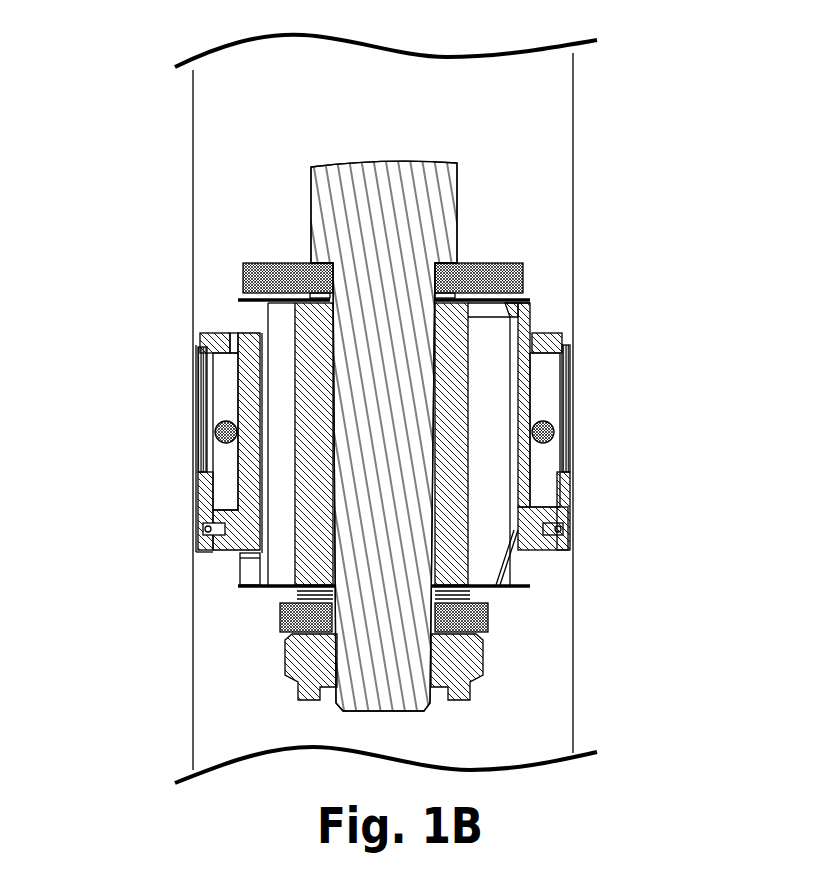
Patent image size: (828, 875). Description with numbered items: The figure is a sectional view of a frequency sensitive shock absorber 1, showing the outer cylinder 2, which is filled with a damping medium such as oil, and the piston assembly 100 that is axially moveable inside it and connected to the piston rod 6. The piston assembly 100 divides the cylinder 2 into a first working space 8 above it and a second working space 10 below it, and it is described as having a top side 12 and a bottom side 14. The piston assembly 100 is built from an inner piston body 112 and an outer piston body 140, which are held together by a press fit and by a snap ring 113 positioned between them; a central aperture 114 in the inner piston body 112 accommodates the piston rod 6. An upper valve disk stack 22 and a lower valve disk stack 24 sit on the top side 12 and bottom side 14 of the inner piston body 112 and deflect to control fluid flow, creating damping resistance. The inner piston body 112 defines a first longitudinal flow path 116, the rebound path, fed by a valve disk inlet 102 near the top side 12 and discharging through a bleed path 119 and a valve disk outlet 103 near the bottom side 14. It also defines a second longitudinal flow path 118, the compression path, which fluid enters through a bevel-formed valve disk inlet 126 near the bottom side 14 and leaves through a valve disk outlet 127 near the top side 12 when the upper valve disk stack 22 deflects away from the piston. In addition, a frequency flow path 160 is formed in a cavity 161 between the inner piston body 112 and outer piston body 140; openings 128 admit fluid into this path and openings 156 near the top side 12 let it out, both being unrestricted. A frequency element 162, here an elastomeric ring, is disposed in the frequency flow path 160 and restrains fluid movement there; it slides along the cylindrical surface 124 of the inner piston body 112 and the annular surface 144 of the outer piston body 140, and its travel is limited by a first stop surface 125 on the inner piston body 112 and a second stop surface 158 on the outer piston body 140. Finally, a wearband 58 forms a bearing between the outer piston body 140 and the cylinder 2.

The shock absorber 1 is at (79, 152).
The outer cylinder 2 is at (575, 180).
The piston rod 6 is at (390, 160).
The first working space 8 is at (235, 152).
The second working space 10 is at (272, 732).
The top side 12 is at (475, 250).
The bottom side 14 is at (500, 605).
The upper valve disk stack 22 is at (497, 300).
The lower valve disk stack 24 is at (285, 622).
The wearband 58 is at (197, 418).
The piston assembly 100 is at (233, 287).
The valve disk inlet 102 is at (247, 304).
The valve disk outlet 103 is at (260, 590).
The inner piston body 112 is at (530, 308).
The snap ring 113 is at (560, 530).
The central aperture 114 is at (338, 328).
The first longitudinal flow path 116 is at (272, 392).
The second longitudinal flow path 118 is at (500, 390).
The bleed path 119 is at (240, 560).
The cylindrical surface 124 is at (237, 394).
The first stop surface 125 is at (203, 495).
The valve disk inlet 126 is at (520, 567).
The valve disk outlet 127 is at (532, 308).
The openings 128 is at (568, 518).
The outer piston body 140 is at (568, 495).
The annular surface 144 is at (200, 480).
The openings 156 is at (197, 333).
The second stop surface 158 is at (198, 363).
The frequency flow path 160 is at (568, 447).
The cavity 161 is at (570, 485).
The frequency element 162 is at (573, 413).